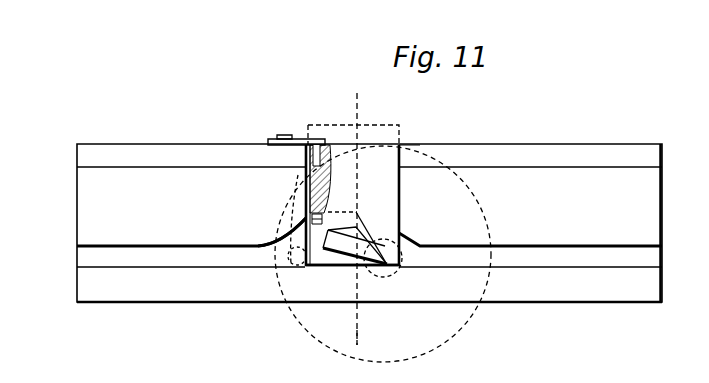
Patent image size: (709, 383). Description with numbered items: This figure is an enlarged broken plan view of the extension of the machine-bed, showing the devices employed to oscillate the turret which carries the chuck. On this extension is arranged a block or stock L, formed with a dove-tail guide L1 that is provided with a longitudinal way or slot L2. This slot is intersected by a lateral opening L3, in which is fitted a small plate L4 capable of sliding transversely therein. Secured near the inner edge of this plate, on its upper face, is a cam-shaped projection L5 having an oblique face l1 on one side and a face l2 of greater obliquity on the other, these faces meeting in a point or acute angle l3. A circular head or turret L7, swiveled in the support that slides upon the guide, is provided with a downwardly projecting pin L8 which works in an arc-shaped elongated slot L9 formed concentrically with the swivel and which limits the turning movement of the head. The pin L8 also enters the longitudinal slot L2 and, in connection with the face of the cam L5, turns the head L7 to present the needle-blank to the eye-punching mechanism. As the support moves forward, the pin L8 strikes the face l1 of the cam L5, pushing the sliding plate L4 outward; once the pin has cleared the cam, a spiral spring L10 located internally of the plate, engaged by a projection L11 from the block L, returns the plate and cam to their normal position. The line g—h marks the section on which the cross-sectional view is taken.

The block or stock L is at (662, 217).
The dove-tail guide L1 is at (369, 190).
The longitudinal way or slot L2 is at (84, 255).
The lateral opening L3 is at (400, 145).
The sliding plate L4 is at (352, 205).
The cam-shaped projection L5 is at (331, 277).
The circular head or turret L7 is at (383, 254).
The downwardly projecting pin L8 is at (276, 280).
The arc-shaped elongated slot L9 is at (283, 222).
The spiral spring L10 is at (326, 192).
The projection L11 is at (316, 128).
The oblique face l1 is at (348, 268).
The face of greater obliquity l2 is at (386, 246).
The point or acute angle l3 is at (402, 262).
The section line g-h g is at (354, 212).
The section line g- h is at (355, 346).